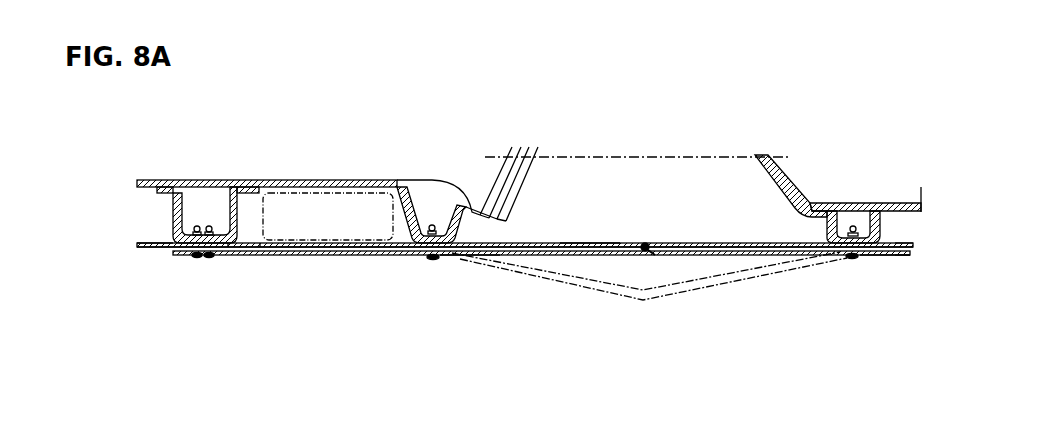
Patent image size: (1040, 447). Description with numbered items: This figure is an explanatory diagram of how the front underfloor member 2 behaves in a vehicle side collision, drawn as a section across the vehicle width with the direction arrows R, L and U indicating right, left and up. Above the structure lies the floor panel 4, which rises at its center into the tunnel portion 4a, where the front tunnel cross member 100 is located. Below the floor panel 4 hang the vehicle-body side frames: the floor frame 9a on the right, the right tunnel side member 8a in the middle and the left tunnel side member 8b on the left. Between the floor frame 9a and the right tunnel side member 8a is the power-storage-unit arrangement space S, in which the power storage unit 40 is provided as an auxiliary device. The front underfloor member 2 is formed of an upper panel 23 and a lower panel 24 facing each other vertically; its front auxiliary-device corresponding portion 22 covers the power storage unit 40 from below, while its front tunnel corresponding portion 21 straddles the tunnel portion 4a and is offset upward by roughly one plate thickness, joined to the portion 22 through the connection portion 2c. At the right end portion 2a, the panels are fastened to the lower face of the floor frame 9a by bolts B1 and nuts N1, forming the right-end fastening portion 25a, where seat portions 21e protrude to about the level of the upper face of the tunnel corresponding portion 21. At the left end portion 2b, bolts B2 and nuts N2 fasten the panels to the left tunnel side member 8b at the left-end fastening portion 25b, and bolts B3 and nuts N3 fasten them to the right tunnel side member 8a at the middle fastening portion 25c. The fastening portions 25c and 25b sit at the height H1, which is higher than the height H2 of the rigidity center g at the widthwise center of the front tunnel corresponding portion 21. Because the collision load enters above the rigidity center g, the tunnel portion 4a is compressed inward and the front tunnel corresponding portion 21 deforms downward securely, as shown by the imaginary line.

The power storage unit 40 is at (318, 186).
The floor panel 4 is at (908, 200).
The tunnel portion 4a is at (793, 184).
The front tunnel cross member 100 is at (519, 191).
The right tunnel side member 8a is at (466, 223).
The left tunnel side member 8b is at (828, 238).
The floor frame 9a is at (178, 222).
The front tunnel corresponding portion 21 is at (667, 243).
The seat portion 21e is at (230, 249).
The front auxiliary-device corresponding portion 22 is at (305, 254).
The upper panel 23 is at (640, 251).
The lower panel 24 is at (590, 242).
The right-end fastening portion 25a is at (204, 262).
The left-end fastening portion 25b is at (852, 262).
The middle fastening portion 25c is at (434, 262).
The front underfloor member 2 is at (876, 296).
The right end portion 2a is at (181, 262).
The left end portion 2b is at (877, 262).
The connection portion 2c is at (453, 262).
The bolt B1 is at (197, 226).
The nut N1 is at (209, 226).
The bolt B2 is at (853, 226).
The nut N2 is at (858, 233).
The bolt B3 is at (432, 225).
The nut N3 is at (437, 231).
The power-storage-unit arrangement space S is at (254, 221).
The rigidity center g is at (657, 256).
The height of fastening portions H1 is at (913, 243).
The height of rigidity center H2 is at (912, 256).
The right direction R is at (96, 208).
The left direction L is at (927, 208).
The up direction U is at (425, 100).